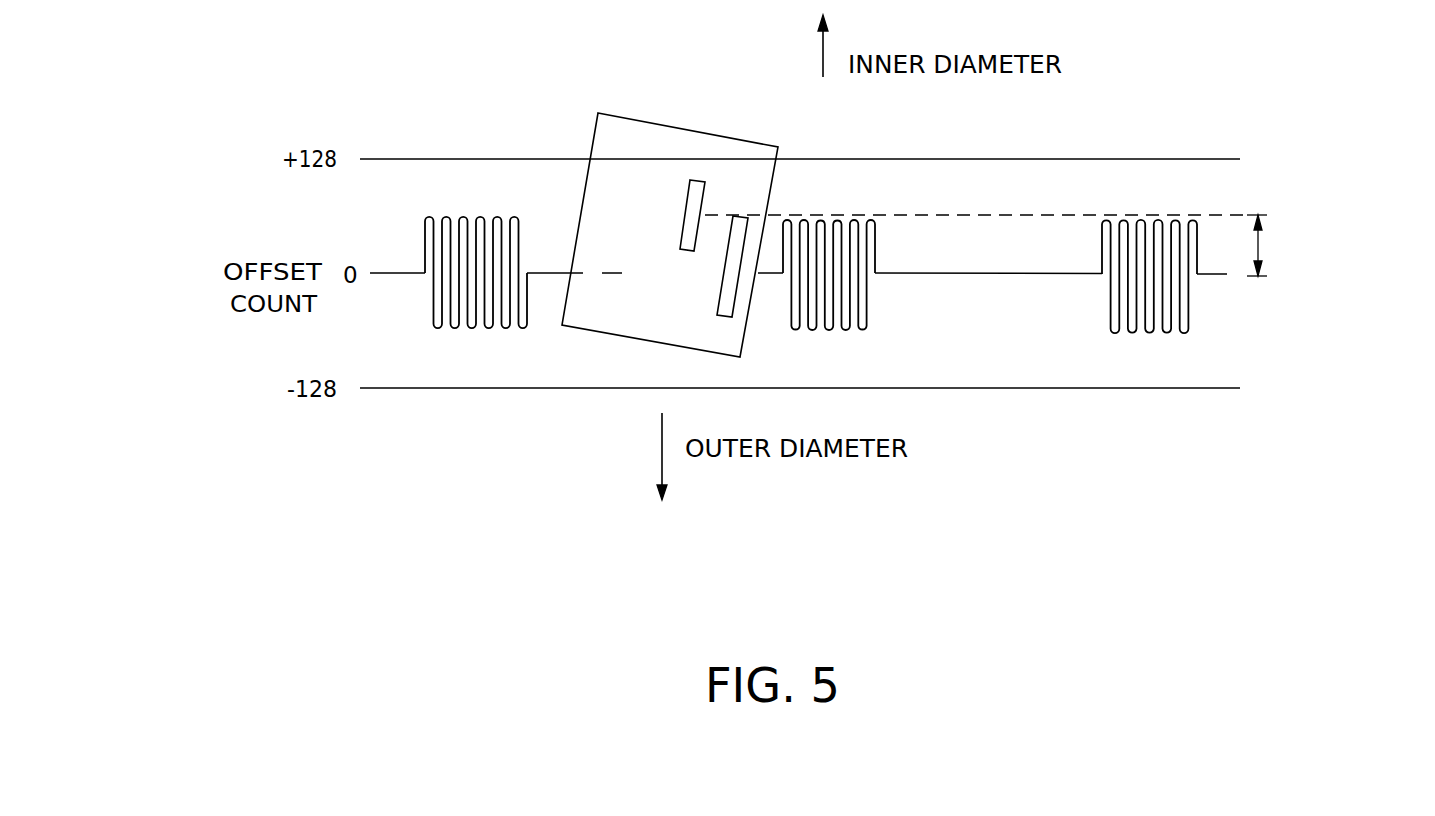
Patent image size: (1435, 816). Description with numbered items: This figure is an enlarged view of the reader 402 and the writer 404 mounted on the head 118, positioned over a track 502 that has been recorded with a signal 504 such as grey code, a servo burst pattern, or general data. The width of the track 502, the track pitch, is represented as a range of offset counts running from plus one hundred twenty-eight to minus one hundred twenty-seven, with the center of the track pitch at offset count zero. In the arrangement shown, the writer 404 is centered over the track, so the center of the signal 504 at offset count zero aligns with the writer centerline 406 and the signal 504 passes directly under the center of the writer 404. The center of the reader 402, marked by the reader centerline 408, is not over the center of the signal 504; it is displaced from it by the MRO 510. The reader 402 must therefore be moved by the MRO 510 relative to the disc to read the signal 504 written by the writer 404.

The track 502 is at (272, 215).
The head 118 is at (592, 138).
The reader 402 is at (690, 180).
The writer 404 is at (740, 320).
The signal 504 is at (473, 330).
The reader centerline 408 is at (1250, 215).
The MRO 510 is at (1267, 245).
The writer centerline 406 is at (1248, 277).